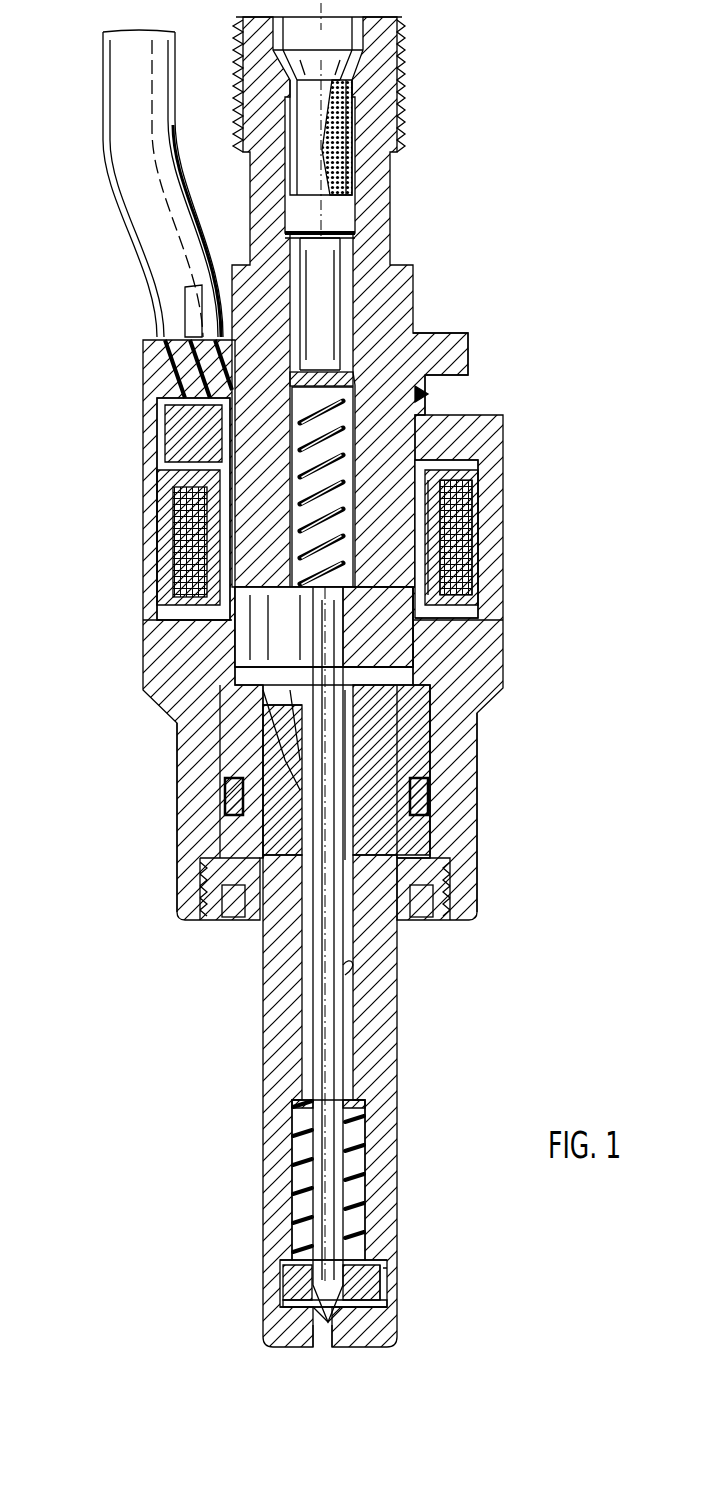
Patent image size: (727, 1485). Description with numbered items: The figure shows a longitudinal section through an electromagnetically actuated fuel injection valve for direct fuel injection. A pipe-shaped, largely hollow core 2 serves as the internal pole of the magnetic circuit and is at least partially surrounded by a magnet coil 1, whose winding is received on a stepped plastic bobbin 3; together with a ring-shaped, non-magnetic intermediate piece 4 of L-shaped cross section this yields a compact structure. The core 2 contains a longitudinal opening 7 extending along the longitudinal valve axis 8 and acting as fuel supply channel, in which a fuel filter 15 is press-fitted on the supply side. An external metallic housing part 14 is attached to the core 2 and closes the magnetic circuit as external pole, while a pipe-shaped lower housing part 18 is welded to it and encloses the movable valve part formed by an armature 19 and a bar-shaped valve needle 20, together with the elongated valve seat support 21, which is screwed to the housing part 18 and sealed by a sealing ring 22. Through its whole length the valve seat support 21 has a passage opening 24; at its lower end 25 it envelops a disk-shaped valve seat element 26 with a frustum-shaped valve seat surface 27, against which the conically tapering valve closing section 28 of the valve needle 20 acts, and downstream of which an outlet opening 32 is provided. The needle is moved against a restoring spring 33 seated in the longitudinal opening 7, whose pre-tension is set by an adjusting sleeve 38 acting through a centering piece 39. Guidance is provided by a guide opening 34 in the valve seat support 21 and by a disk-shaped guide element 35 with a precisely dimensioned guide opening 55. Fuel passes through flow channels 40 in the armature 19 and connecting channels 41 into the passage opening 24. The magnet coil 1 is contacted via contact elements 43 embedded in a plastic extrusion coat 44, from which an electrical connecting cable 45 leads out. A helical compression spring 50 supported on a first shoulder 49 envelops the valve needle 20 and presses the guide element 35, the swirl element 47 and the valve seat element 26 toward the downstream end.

The magnet coil 1 is at (175, 525).
The core 2 is at (411, 265).
The bobbin 3 is at (440, 493).
The intermediate piece 4 is at (462, 541).
The longitudinal opening 7 is at (430, 398).
The longitudinal valve axis 8 is at (350, 1135).
The housing part 14 is at (485, 443).
The fuel filter 15 is at (348, 118).
The lower housing part 18 is at (460, 732).
The armature 19 is at (248, 640).
The valve needle 20 is at (320, 1030).
The valve seat support 21 is at (385, 1020).
The sealing ring 22 is at (232, 796).
The passage opening 24 is at (347, 965).
The lower end 25 is at (400, 1342).
The valve seat element 26 is at (288, 1330).
The valve seat surface 27 is at (285, 1290).
The valve closing section 28 is at (392, 1312).
The outlet opening 32 is at (290, 1305).
The restoring spring 33 is at (295, 430).
The guide opening 34 is at (350, 748).
The guide element 35 is at (387, 1270).
The adjusting sleeve 38 is at (355, 290).
The centering piece 39 is at (440, 356).
The flow channel 40 is at (375, 640).
The connecting channel 41 is at (290, 745).
The contact element 43 is at (192, 298).
The plastic extrusion coat 44 is at (155, 376).
The electrical connecting cable 45 is at (113, 82).
The swirl element 47 is at (392, 1292).
The first shoulder 49 is at (292, 1112).
The compression spring 50 is at (292, 1195).
The guide opening 55 is at (355, 1245).